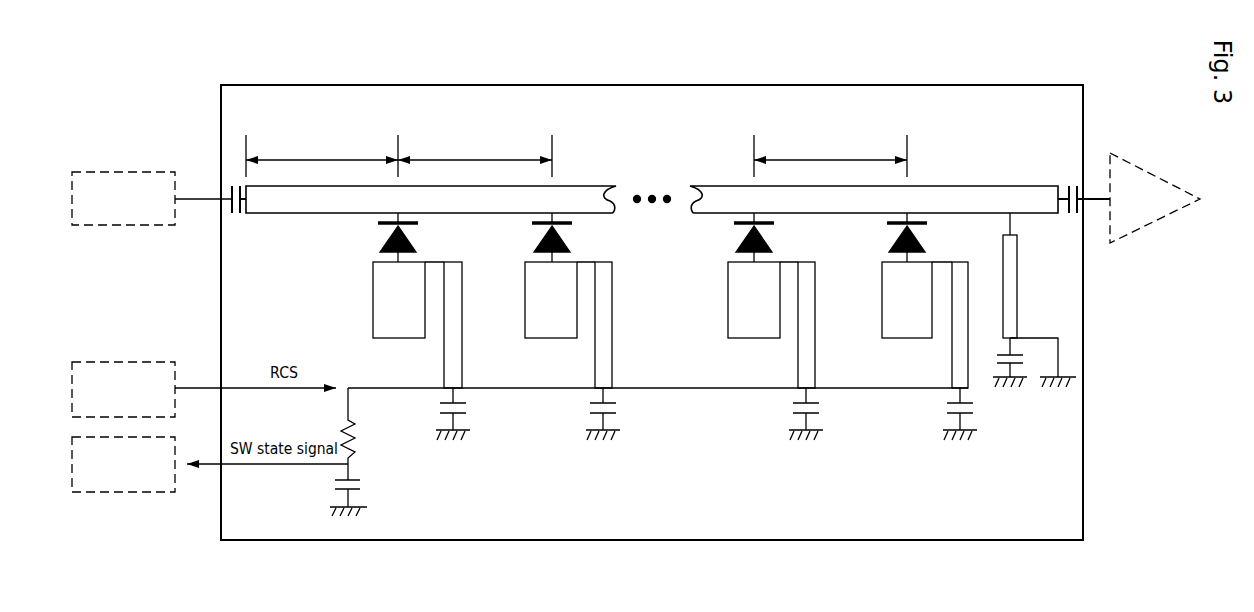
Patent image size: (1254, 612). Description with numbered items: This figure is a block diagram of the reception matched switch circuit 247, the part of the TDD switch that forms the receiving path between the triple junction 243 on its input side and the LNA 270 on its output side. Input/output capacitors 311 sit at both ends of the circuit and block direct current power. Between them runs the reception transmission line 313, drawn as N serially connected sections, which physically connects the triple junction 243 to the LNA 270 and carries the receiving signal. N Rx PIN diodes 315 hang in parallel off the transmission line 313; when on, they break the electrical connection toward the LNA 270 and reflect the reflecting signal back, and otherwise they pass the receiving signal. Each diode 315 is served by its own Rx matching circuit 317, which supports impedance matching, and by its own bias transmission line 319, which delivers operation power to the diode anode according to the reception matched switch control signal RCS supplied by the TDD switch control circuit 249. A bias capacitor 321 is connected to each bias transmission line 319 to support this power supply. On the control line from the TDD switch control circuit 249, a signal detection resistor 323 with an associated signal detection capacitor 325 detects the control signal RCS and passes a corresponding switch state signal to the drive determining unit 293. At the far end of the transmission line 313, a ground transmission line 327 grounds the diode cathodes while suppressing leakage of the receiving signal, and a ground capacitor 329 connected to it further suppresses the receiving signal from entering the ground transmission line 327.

The triple junction 243 is at (123, 172).
The reception matched switch circuit (RMSC) 247 is at (765, 84).
The TDD switch control circuit (TSCC) 249 is at (123, 358).
The LNA 270 is at (1142, 167).
The drive determining unit 293 is at (122, 493).
The input/output capacitor 311 is at (240, 213).
The reception transmission line (RTL) 313 is at (472, 119).
The Rx PIN diode (RD) 315 is at (380, 238).
The Rx matching circuit (RMC) 317 is at (373, 326).
The bias transmission line (BTL) 319 is at (462, 371).
The bias capacitor 321 is at (598, 398).
The signal detection resistor 323 is at (356, 445).
The signal detection capacitor 325 is at (334, 494).
The ground transmission line (GTL) 327 is at (1018, 297).
The ground capacitor 329 is at (1003, 352).